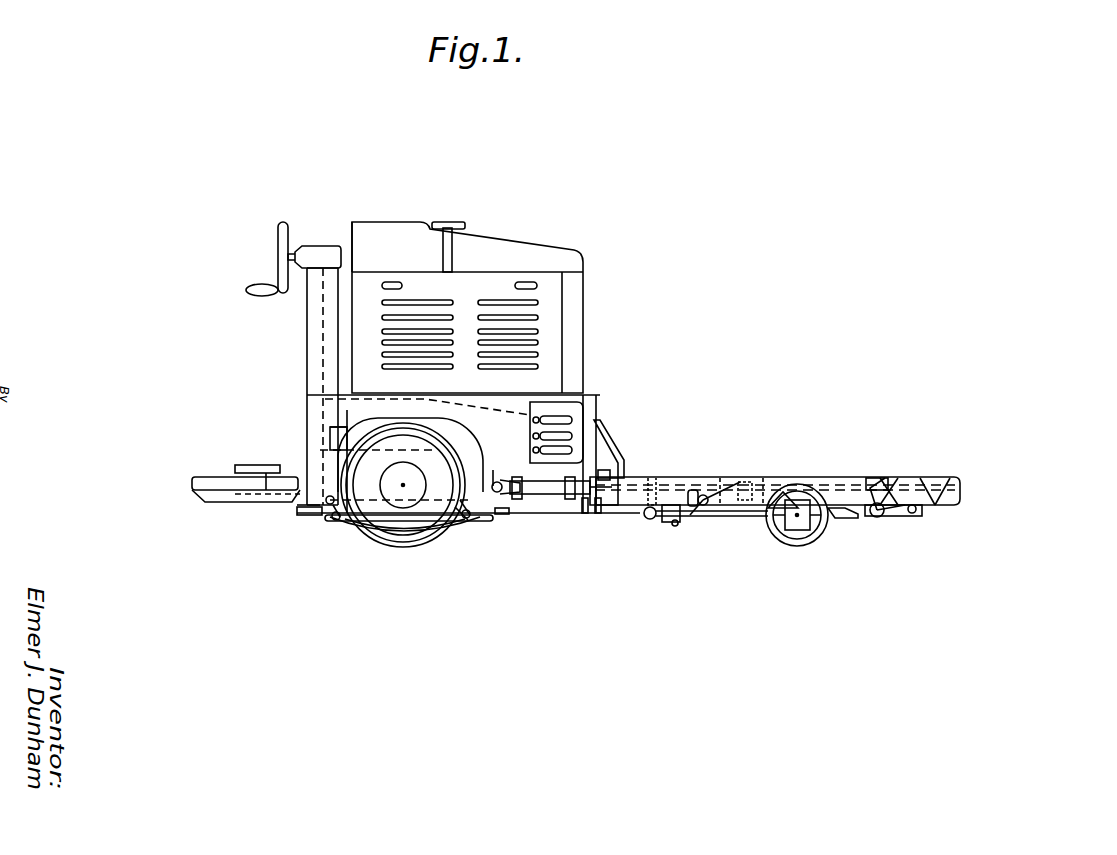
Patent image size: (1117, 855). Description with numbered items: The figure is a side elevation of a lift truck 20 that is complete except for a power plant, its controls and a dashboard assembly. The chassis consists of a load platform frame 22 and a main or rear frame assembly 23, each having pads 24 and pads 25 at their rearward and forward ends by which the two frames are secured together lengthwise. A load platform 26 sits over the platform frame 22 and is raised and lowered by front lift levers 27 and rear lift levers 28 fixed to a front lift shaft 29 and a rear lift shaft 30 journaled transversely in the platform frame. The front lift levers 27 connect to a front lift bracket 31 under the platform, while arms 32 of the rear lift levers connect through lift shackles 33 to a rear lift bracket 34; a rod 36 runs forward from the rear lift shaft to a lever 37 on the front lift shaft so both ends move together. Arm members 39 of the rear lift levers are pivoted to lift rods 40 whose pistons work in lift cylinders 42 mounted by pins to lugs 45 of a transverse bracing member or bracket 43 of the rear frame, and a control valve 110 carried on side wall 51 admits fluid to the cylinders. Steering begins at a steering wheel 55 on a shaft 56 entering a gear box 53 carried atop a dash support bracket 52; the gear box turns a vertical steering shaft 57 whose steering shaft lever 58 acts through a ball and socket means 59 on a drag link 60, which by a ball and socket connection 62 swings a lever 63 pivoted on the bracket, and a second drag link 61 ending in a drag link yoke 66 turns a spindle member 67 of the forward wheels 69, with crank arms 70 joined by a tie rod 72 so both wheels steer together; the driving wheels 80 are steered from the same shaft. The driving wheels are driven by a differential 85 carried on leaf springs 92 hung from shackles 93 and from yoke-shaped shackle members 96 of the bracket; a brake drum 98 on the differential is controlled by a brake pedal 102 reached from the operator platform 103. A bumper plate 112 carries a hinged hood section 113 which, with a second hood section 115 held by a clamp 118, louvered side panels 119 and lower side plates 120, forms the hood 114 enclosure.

The lift truck 20 is at (511, 178).
The hood 114 is at (350, 240).
The hood section 113 is at (507, 243).
The second hood section 115 is at (376, 232).
The clamp 118 is at (420, 232).
The side plates or panels 119 is at (360, 378).
The side plates 120 is at (327, 398).
The steering wheel 55 is at (276, 276).
The shaft 56 is at (280, 288).
The gear box 53 is at (315, 242).
The steering shaft 57 is at (308, 322).
The dash support bracket 52 is at (300, 345).
The brake drum 98 is at (328, 443).
The differential 85 is at (433, 512).
The main or rear frame assembly 23 is at (300, 456).
The brake pedal 102 is at (235, 468).
The platform 103 is at (200, 494).
The ball and socket means 59 is at (288, 522).
The steering shaft lever 58 is at (303, 509).
The driving wheels 80 is at (340, 425).
The drag link 60 is at (355, 520).
The shackles 93 is at (337, 515).
The leaf springs 92 is at (417, 516).
The bracing member or bracket 43 is at (466, 512).
The shackle members 96 is at (468, 521).
The ball and socket connection 62 is at (515, 522).
The lever 63 is at (503, 522).
The lugs 45 is at (498, 486).
The lift cylinders 42 is at (535, 522).
The lift rods 40 is at (605, 477).
The side wall 51 is at (472, 427).
The control valve 110 is at (557, 425).
The bumper plate 112 is at (578, 326).
The load platform frame 22 is at (617, 505).
The pads 25 is at (585, 513).
The pads 24 is at (598, 513).
The load platform 26 is at (872, 477).
The arm members 39 is at (652, 478).
The rod 36 is at (745, 478).
The lever 37 is at (866, 476).
The drag link 61 is at (640, 520).
The drag link yoke 66 is at (783, 492).
The rear lift bracket 34 is at (900, 660).
The arms 32 is at (677, 524).
The rear lift shaft 30 is at (700, 512).
The rear lift levers 28 is at (703, 505).
The lift shackles 33 is at (693, 498).
The spindle member 67 is at (880, 604).
The forward wheels 69 is at (770, 525).
The crank arms 70 is at (848, 518).
The front lift bracket 31 is at (905, 505).
The front lift shaft 29 is at (885, 510).
The tie rod 72 is at (906, 518).
The front lift levers 27 is at (1105, 606).